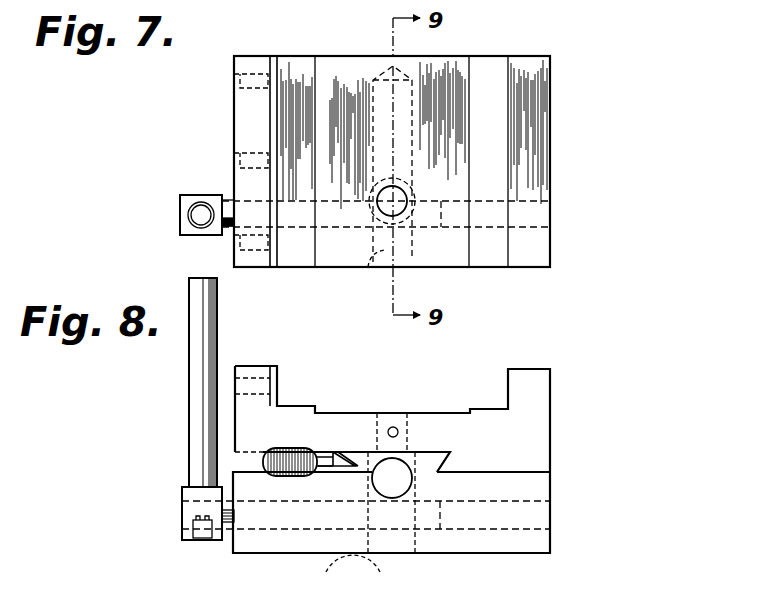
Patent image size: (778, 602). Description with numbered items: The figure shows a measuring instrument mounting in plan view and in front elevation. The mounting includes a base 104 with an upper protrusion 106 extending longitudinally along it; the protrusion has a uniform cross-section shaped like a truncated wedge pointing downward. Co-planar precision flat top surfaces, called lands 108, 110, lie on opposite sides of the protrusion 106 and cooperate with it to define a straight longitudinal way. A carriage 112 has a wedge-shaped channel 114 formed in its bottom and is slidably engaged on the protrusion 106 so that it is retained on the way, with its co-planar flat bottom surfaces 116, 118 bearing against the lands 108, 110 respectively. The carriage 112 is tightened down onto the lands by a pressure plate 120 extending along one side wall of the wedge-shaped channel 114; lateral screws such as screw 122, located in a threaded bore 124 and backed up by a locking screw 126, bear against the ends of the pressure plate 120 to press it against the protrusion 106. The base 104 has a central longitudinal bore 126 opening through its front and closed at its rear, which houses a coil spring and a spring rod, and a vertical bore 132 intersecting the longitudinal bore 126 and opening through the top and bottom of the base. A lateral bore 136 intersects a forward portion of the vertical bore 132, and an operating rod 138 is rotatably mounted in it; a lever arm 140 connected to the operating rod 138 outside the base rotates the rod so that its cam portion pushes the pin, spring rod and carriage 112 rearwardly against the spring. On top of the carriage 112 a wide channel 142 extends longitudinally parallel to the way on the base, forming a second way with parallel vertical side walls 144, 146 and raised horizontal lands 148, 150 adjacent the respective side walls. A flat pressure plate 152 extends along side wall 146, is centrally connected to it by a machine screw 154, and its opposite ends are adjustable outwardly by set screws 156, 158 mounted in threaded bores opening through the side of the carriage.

In FIG. 8, the base 104 is at (530, 488).
In FIG. 8, the upper protrusion 106 is at (425, 458).
In FIG. 8, the flat top surface (land) 108 is at (318, 470).
In FIG. 8, the flat top surface (land) 110 is at (470, 472).
In FIG. 8, the carriage 112 is at (528, 424).
In FIG. 8, the wedge-shaped channel 114 is at (372, 452).
In FIG. 8, the flat bottom surface 116 is at (322, 440).
In FIG. 8, the flat bottom surface 118 is at (487, 474).
In FIG. 8, the pressure plate 120 is at (338, 475).
In FIG. 8, the screw 122 is at (334, 434).
In FIG. 8, the threaded bore 124 is at (264, 462).
In FIG. 7, the longitudinal bore 126 is at (382, 262).
In FIG. 8, the longitudinal bore 126 is at (440, 572).
In FIG. 7, the vertical bore 132 is at (403, 173).
In FIG. 8, the vertical bore 132 is at (372, 540).
In FIG. 7, the lateral bore 136 is at (548, 213).
In FIG. 8, the lateral bore 136 is at (326, 572).
In FIG. 8, the operating rod 138 is at (232, 533).
In FIG. 8, the lever arm 140 is at (189, 418).
In FIG. 8, the wide channel 142 is at (455, 415).
In FIG. 8, the vertical side wall 144 is at (508, 380).
In FIG. 8, the vertical side wall 146 is at (275, 372).
In FIG. 7, the raised horizontal land 148 is at (487, 73).
In FIG. 8, the raised horizontal land 148 is at (490, 408).
In FIG. 7, the raised horizontal land 150 is at (290, 71).
In FIG. 8, the raised horizontal land 150 is at (315, 410).
In FIG. 7, the flat pressure plate 152 is at (275, 268).
In FIG. 8, the flat pressure plate 152 is at (277, 402).
In FIG. 7, the machine screw 154 is at (245, 155).
In FIG. 7, the set screw 156 is at (240, 75).
In FIG. 7, the set screw 158 is at (240, 257).